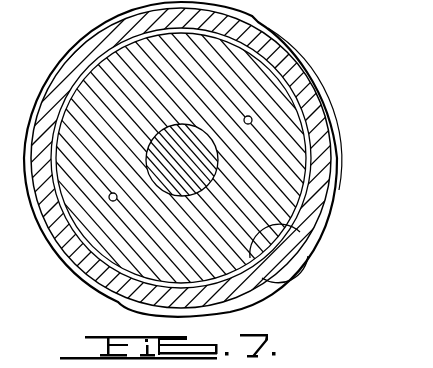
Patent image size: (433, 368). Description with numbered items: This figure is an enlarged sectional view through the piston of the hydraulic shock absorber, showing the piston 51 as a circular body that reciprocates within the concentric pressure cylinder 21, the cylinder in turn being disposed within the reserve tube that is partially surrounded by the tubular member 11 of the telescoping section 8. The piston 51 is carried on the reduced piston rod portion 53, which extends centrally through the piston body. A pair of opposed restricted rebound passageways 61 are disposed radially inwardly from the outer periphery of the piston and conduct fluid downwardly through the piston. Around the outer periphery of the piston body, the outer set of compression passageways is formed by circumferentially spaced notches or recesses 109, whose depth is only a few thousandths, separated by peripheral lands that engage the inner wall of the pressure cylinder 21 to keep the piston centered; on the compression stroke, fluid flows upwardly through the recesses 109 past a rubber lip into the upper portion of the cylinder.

The tubular member 11 is at (108, 50).
The pressure cylinder 21 is at (299, 81).
The notches or recesses 109 is at (132, 34).
The piston 51 is at (118, 159).
The reduced piston rod portion 53 is at (190, 166).
The restricted passageways 61 is at (249, 124).
The telescoping section 8 is at (302, 246).